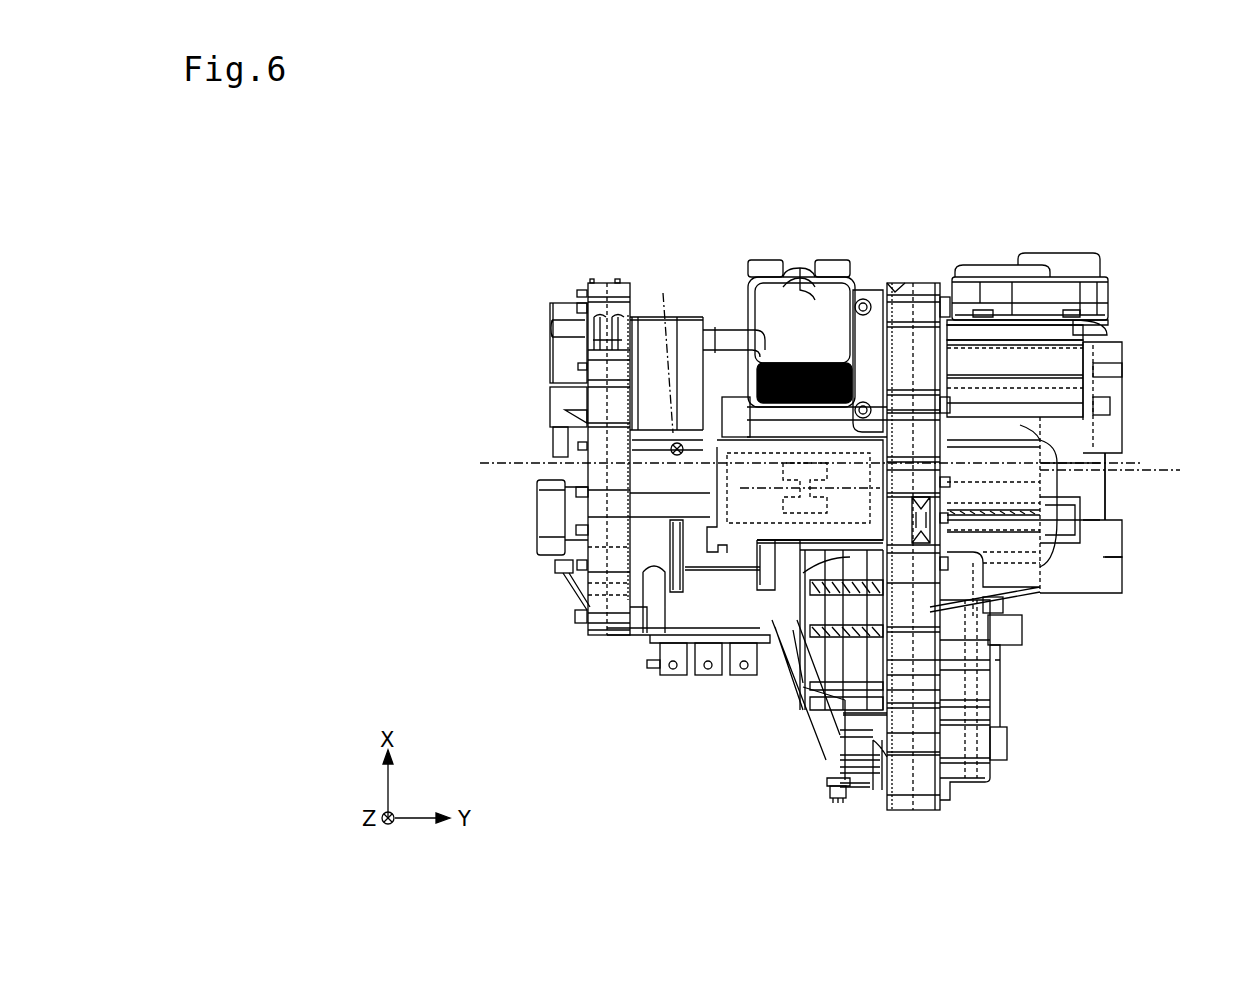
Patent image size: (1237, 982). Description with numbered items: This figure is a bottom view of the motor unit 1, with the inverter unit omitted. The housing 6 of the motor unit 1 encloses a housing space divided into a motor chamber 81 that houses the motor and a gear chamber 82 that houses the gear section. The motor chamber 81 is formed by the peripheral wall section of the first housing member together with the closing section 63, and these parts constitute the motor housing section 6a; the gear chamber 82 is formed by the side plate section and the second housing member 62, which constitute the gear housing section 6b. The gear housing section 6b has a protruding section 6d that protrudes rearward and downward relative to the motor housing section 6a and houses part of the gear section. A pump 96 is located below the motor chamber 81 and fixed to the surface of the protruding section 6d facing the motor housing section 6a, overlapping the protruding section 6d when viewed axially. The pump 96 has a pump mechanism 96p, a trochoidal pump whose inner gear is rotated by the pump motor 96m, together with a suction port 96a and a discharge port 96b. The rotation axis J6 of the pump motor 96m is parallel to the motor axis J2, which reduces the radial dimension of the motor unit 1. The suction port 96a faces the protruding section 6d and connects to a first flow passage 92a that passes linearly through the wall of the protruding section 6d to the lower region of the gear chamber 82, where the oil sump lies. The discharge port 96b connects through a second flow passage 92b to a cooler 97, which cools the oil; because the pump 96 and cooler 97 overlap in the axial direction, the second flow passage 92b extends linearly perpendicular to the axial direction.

The motor unit 1 is at (1098, 225).
The housing 6 is at (935, 258).
The motor housing section 6a is at (697, 345).
The gear housing section 6b is at (1100, 432).
The protruding section 6d is at (897, 783).
The second housing member 62 is at (1130, 340).
The closing section 63 is at (572, 293).
The motor chamber 81 is at (700, 393).
The gear chamber 82 is at (1121, 496).
The first flow passage 92a is at (860, 640).
The second flow passage 92b is at (830, 407).
The pump 96 is at (758, 577).
The suction port 96a is at (812, 572).
The discharge port 96b is at (889, 283).
The pump motor 96m is at (740, 540).
The pump mechanism 96p is at (762, 560).
The cooler 97 is at (812, 317).
The motor axis J2 is at (505, 462).
The rotation axis J6 is at (659, 349).